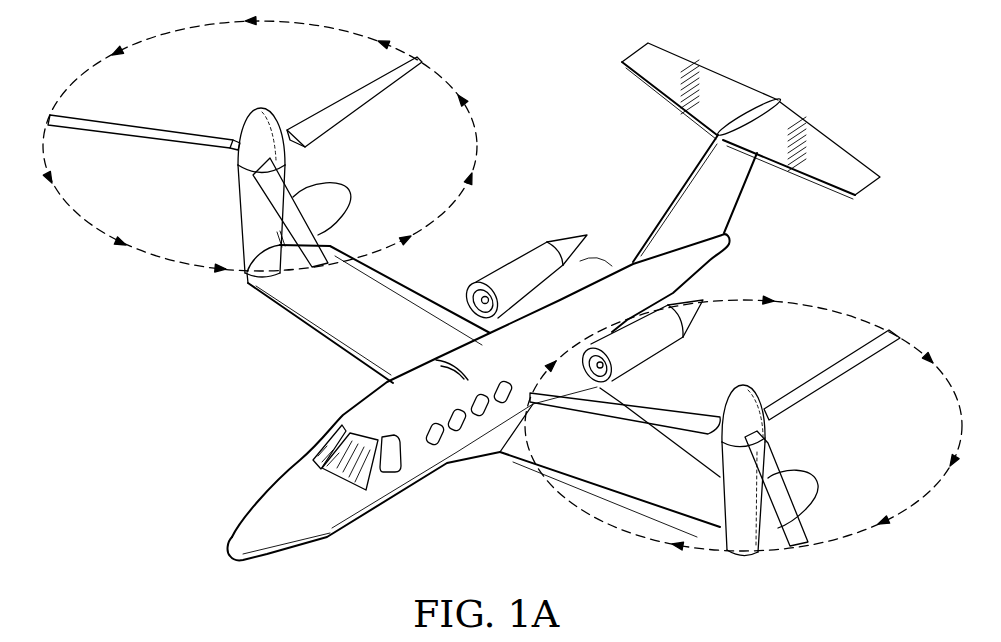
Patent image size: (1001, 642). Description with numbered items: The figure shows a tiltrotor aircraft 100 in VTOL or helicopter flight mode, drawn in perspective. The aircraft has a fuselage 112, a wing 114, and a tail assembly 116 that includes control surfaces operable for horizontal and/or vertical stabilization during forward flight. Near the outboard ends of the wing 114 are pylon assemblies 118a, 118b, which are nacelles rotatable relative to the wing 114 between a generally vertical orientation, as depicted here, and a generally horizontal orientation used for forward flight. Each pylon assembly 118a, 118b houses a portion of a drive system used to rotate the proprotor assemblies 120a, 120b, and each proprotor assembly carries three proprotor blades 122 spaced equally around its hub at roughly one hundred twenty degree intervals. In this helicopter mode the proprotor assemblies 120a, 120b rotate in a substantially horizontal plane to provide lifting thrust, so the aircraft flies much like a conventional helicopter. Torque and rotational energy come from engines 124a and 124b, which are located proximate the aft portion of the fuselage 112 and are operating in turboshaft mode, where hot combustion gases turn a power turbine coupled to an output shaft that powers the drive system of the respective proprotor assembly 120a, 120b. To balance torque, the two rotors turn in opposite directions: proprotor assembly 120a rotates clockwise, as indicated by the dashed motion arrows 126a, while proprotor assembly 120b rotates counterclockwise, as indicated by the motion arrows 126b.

The tiltrotor aircraft 100 is at (861, 104).
The fuselage 112 is at (307, 527).
The wing 114 is at (352, 337).
The tail assembly 116 is at (727, 95).
The pylon assembly 118a is at (720, 503).
The pylon assembly 118b is at (240, 197).
The proprotor assembly 120a is at (822, 424).
The proprotor assembly 120b is at (245, 86).
The proprotor blade 122 is at (336, 103).
The engine 124a is at (647, 338).
The engine 124b is at (531, 246).
The motion arrows 126a is at (850, 313).
The motion arrows 126b is at (482, 142).